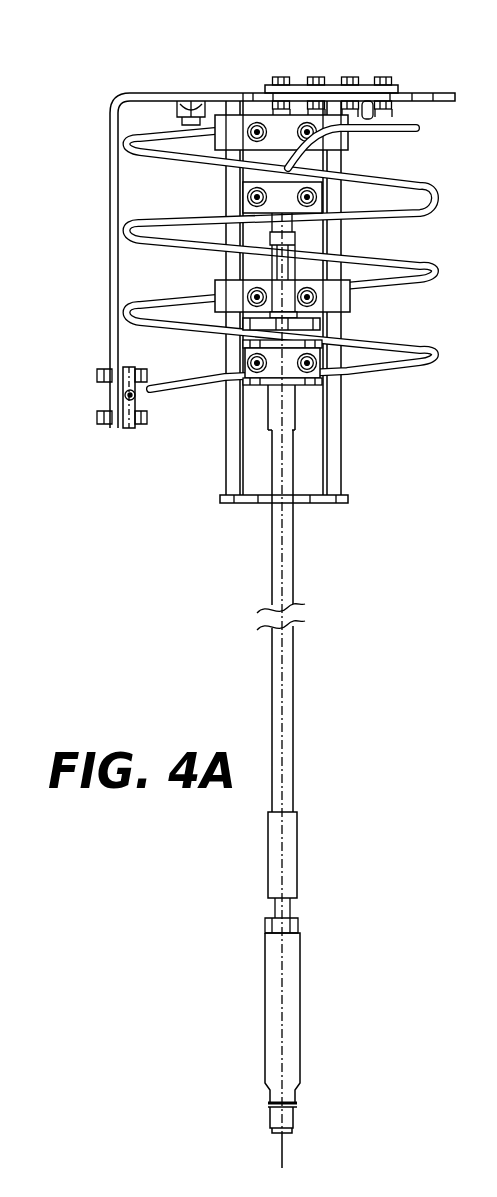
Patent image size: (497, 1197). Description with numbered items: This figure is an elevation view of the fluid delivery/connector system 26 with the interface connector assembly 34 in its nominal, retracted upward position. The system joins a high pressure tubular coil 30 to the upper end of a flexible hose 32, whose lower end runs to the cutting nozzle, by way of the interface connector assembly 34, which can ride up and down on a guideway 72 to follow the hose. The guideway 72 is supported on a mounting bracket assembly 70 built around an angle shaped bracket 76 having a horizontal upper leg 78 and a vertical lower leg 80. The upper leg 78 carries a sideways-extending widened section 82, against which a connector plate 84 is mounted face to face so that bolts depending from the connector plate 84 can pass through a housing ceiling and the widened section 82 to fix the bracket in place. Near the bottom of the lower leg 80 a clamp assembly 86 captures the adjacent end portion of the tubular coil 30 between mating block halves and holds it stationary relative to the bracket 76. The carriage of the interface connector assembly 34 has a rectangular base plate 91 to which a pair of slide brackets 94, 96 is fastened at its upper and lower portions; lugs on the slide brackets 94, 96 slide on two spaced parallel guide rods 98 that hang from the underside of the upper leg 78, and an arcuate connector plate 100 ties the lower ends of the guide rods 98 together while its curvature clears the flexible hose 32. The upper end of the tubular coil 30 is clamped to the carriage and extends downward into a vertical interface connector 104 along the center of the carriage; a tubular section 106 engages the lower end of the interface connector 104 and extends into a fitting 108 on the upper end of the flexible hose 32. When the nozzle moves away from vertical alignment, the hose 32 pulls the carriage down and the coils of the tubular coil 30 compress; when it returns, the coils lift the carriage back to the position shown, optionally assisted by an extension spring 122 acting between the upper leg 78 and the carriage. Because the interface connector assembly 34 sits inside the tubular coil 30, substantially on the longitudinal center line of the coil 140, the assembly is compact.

The fluid delivery/connector system 26 is at (80, 74).
The high pressure tubular coil 30 is at (413, 363).
The flexible hose 32 is at (271, 684).
The interface connector assembly 34 is at (172, 259).
The mounting bracket assembly 70 is at (152, 90).
The guideway 72 is at (346, 232).
The angle shaped bracket 76 is at (110, 181).
The horizontal upper leg 78 is at (205, 93).
The vertical lower leg 80 is at (112, 298).
The widened section 82 is at (332, 95).
The connector plate 84 is at (368, 85).
The clamp assembly 86 is at (132, 428).
The base plate 91 is at (345, 217).
The slide bracket 94 is at (345, 138).
The slide bracket 96 is at (348, 300).
The guide rods 98 is at (230, 193).
The arcuate connector plate 100 is at (317, 500).
The interface connector 104 is at (295, 272).
The tubular section 106 is at (293, 322).
The fitting 108 is at (290, 415).
The extension spring 122 is at (292, 850).
The longitudinal center line of the coil 140 is at (285, 660).